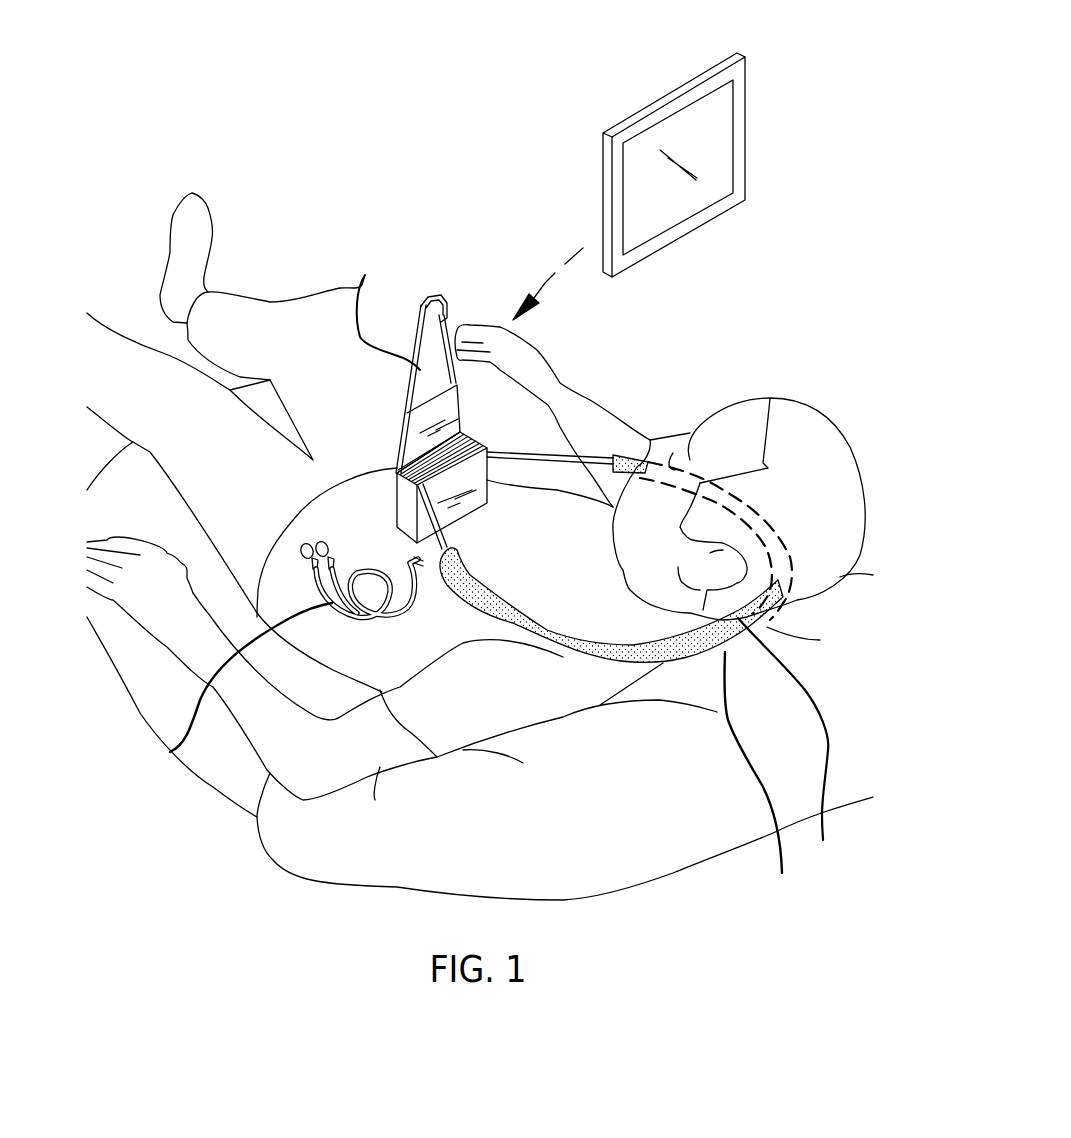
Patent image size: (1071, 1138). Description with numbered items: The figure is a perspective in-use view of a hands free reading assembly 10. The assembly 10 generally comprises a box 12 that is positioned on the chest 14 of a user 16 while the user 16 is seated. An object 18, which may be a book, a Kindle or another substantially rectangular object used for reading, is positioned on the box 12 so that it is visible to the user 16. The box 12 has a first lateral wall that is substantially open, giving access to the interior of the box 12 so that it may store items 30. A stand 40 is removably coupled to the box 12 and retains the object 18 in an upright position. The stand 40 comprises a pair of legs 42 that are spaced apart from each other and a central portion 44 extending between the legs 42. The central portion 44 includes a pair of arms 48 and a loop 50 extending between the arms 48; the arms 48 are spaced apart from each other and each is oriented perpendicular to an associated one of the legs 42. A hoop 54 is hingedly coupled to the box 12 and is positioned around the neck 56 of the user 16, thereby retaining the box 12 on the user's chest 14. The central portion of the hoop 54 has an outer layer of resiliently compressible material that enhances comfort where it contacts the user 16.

The hands free reading assembly 10 is at (517, 108).
The box 12 is at (485, 361).
The chest 14 is at (550, 523).
The user 16 is at (828, 410).
The object 18 is at (742, 57).
The items 30 is at (170, 752).
The stand 40 is at (440, 290).
The legs 42 is at (408, 405).
The central portion 44 is at (412, 432).
The arms 48 is at (423, 298).
The loop 50 is at (447, 314).
The hoop 54 is at (759, 781).
The neck 56 is at (788, 745).